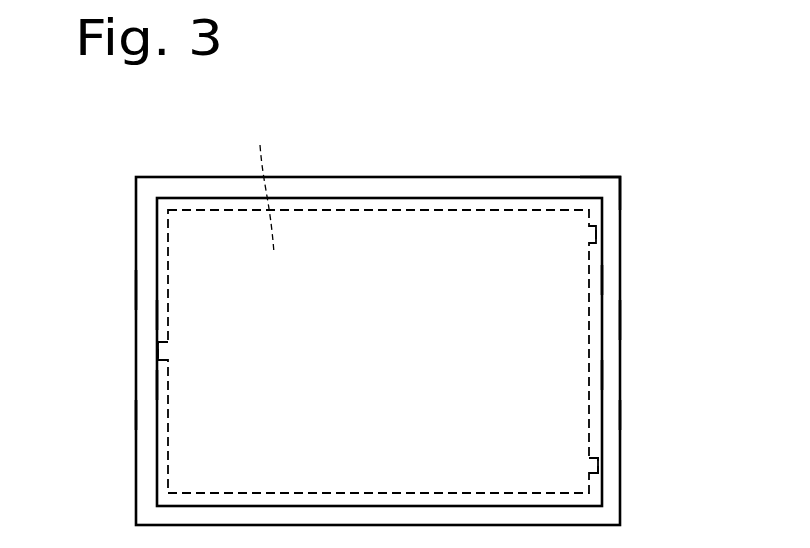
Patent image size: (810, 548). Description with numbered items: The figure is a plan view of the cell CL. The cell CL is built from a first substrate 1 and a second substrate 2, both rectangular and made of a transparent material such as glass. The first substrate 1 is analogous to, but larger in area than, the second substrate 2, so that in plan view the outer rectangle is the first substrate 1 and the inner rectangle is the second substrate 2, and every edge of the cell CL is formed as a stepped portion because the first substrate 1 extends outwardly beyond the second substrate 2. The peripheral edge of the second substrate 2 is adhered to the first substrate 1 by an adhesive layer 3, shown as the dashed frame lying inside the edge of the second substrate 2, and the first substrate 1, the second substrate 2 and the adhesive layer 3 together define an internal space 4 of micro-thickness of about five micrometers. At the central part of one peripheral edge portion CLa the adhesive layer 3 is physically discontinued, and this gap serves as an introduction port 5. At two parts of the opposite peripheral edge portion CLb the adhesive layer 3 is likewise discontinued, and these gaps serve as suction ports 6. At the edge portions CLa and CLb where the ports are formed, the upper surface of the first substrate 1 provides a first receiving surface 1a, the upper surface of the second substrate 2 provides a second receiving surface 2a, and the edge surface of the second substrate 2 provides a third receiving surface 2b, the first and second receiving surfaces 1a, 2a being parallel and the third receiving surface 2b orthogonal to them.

The first substrate 1 is at (453, 177).
The first receiving surface 1a is at (147, 412).
The second substrate 2 is at (370, 198).
The second receiving surface 2a is at (162, 387).
The third receiving surface 2b is at (152, 314).
The adhesive layer 3 is at (316, 209).
The internal space 4 is at (261, 184).
The introduction port 5 is at (162, 350).
The suction ports 6 is at (598, 236).
The cell CL is at (603, 168).
The peripheral edge portion CLa is at (124, 287).
The opposite peripheral edge portion CLb is at (630, 312).